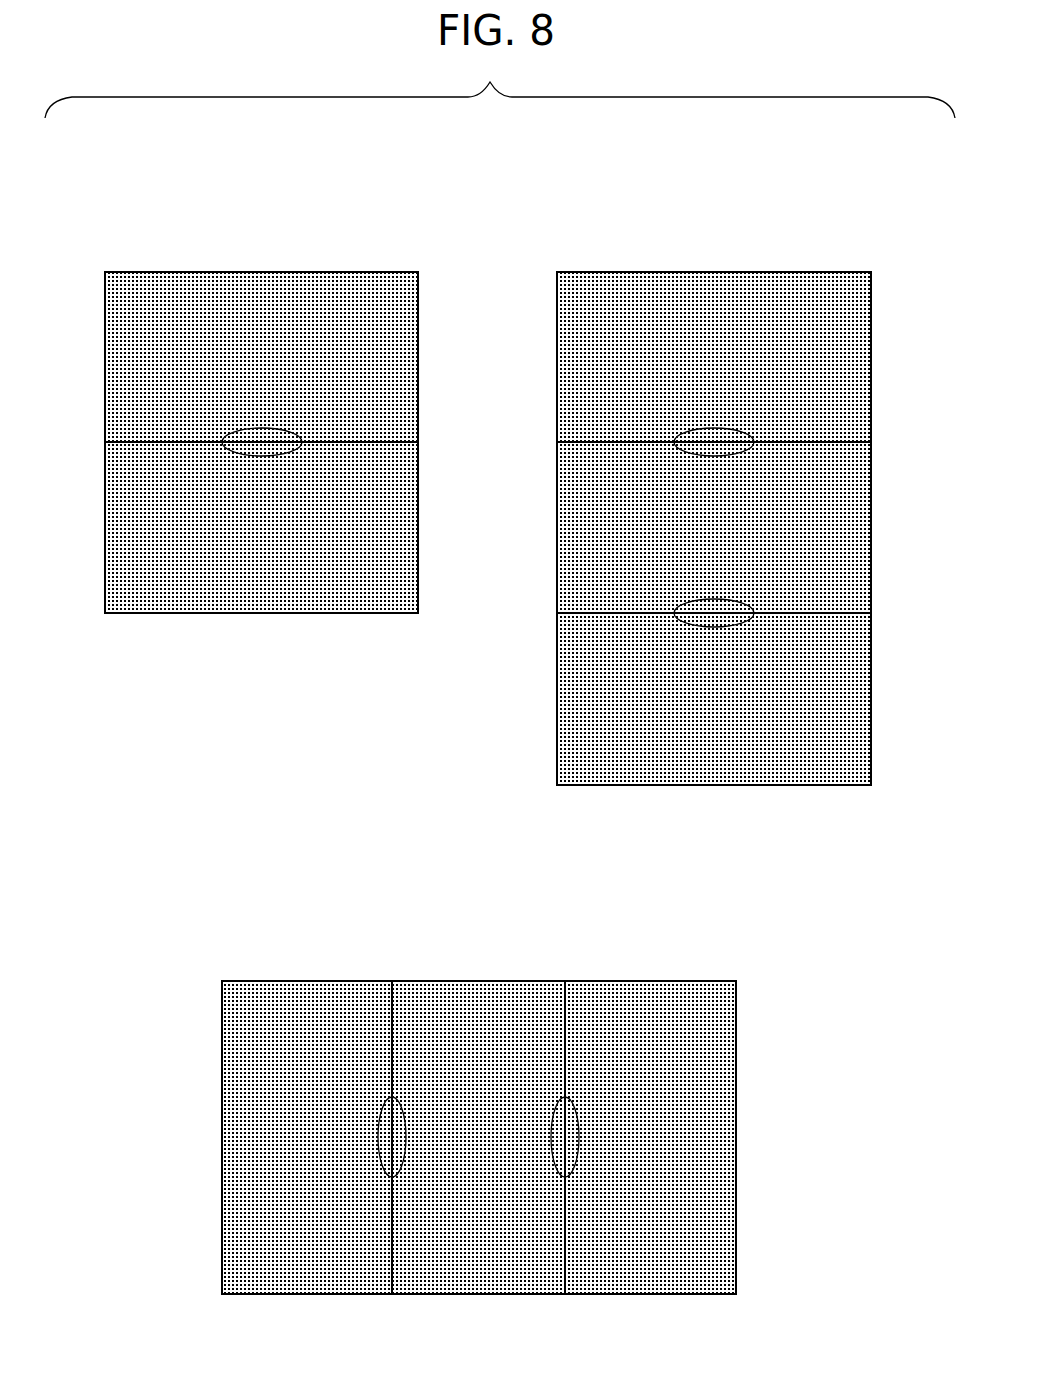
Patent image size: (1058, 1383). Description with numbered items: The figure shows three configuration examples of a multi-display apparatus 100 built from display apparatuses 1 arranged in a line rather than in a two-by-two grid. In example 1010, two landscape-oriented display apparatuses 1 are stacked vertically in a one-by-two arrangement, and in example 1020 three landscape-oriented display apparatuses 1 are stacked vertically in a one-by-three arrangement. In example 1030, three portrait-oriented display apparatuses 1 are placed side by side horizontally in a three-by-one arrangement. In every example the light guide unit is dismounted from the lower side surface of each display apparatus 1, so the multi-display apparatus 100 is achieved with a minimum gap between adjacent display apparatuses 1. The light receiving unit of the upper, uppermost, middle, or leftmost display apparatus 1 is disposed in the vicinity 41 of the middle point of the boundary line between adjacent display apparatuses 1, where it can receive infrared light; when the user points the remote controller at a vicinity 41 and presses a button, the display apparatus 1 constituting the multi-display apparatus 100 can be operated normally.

The multi-display apparatus 100 is at (382, 258).
The example 1010 is at (118, 190).
The example 1020 is at (588, 190).
The example 1030 is at (237, 863).
The display apparatus 1 is at (418, 333).
The vicinity 41 is at (293, 432).